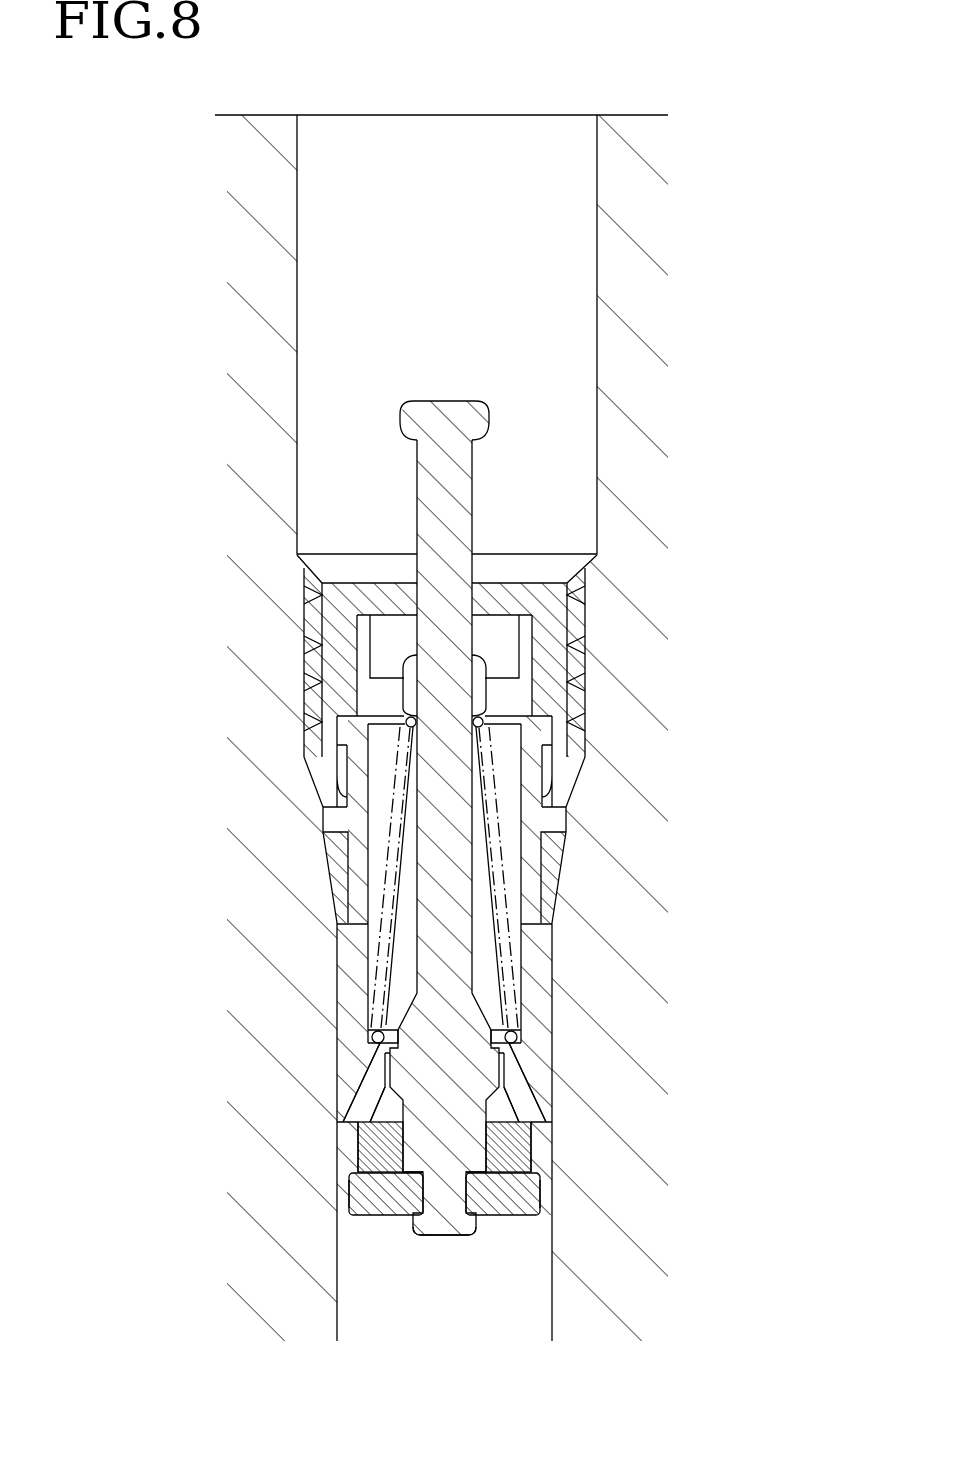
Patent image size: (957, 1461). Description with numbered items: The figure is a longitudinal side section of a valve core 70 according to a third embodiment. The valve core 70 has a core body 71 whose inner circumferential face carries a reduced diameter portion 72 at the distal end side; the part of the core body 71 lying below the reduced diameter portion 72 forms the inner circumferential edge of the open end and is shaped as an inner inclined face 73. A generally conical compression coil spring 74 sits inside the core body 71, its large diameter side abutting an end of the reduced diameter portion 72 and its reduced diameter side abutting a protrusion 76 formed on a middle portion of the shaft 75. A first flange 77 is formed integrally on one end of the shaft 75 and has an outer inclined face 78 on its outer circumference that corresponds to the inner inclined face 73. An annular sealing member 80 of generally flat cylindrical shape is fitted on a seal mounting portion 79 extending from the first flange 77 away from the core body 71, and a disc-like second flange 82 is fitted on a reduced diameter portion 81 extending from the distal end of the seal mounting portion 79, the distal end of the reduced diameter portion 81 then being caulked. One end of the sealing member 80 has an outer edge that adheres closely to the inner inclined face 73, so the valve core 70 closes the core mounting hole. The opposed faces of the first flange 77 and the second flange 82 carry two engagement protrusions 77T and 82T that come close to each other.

The valve core 70 is at (580, 528).
The core body 71 is at (328, 787).
The reduced diameter portion 72 is at (378, 1058).
The inner inclined face 73 is at (382, 1103).
The compression coil spring 74 is at (383, 935).
The shaft 75 is at (430, 868).
The protrusion 76 is at (403, 681).
The first flange 77 is at (512, 1095).
The engagement protrusion 77T is at (360, 1141).
The outer inclined face 78 is at (515, 1112).
The seal mounting portion 79 is at (418, 1157).
The sealing member 80 is at (532, 1150).
The reduced diameter portion 81 is at (447, 1203).
The second flange 82 is at (552, 1210).
The engagement protrusion 82T is at (373, 1195).